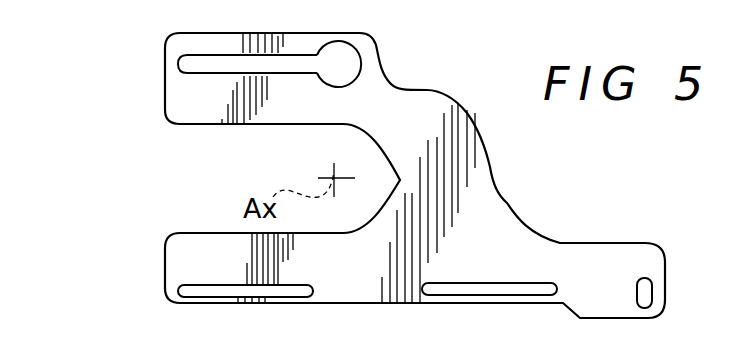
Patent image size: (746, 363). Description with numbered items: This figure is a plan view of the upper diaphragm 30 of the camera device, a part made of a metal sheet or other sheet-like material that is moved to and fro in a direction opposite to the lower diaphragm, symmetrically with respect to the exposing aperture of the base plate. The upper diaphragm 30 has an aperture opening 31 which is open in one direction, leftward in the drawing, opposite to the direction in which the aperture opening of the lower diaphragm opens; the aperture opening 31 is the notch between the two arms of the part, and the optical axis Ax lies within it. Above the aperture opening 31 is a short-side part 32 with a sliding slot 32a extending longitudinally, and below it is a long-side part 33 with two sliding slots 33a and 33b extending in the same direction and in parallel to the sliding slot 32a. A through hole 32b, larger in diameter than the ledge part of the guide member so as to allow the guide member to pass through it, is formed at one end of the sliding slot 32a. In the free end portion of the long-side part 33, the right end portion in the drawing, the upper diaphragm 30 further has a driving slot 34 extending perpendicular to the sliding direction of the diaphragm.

The upper diaphragm 30 is at (90, 132).
The aperture opening 31 is at (320, 160).
The short-side part 32 is at (192, 115).
The sliding slot 32a is at (207, 62).
The through hole 32b is at (352, 57).
The long-side part 33 is at (197, 258).
The sliding slot 33a is at (290, 290).
The sliding slot 33b is at (518, 290).
The driving slot 34 is at (650, 283).